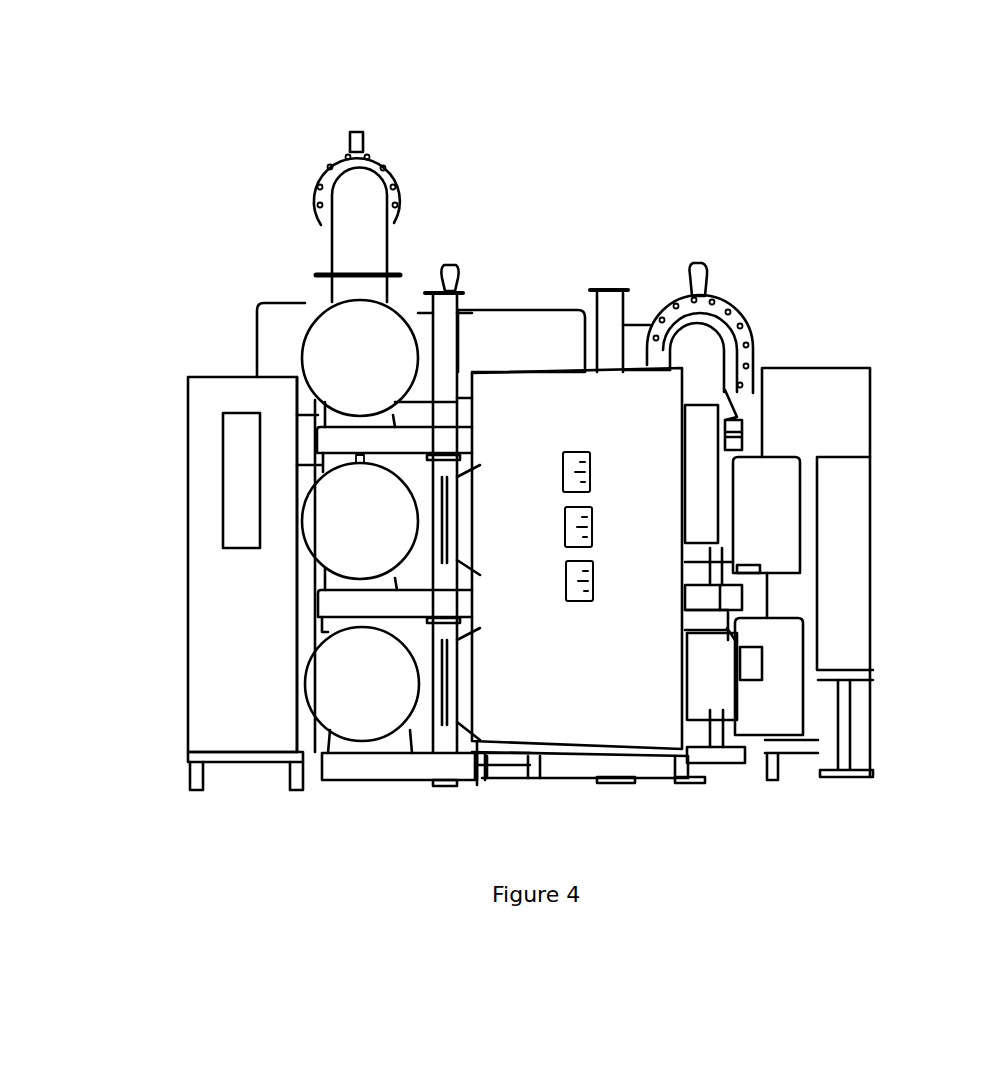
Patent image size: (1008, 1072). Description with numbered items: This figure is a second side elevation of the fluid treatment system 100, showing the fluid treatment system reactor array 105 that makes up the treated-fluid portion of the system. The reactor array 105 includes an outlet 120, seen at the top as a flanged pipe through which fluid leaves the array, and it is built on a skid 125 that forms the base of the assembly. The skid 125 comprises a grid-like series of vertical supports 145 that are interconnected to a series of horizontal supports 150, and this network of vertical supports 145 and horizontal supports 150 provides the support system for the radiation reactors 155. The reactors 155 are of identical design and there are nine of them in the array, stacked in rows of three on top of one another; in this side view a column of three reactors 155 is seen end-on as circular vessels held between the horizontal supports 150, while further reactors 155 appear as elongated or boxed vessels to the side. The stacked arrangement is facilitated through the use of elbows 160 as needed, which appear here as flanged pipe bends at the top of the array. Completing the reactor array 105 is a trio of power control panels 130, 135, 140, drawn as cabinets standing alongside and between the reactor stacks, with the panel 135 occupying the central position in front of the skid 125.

The fluid treatment system 100 is at (655, 110).
The fluid treatment reactor array 105 is at (172, 837).
The outlet 120 is at (320, 170).
The skid 125 is at (560, 772).
The power control panel 130 is at (245, 583).
The power control panel 135 is at (608, 575).
The power control panel 140 is at (817, 574).
The vertical supports 145 is at (432, 313).
The horizontal supports 150 is at (343, 607).
The radiation reactors 155 is at (554, 520).
The elbows 160 is at (347, 228).